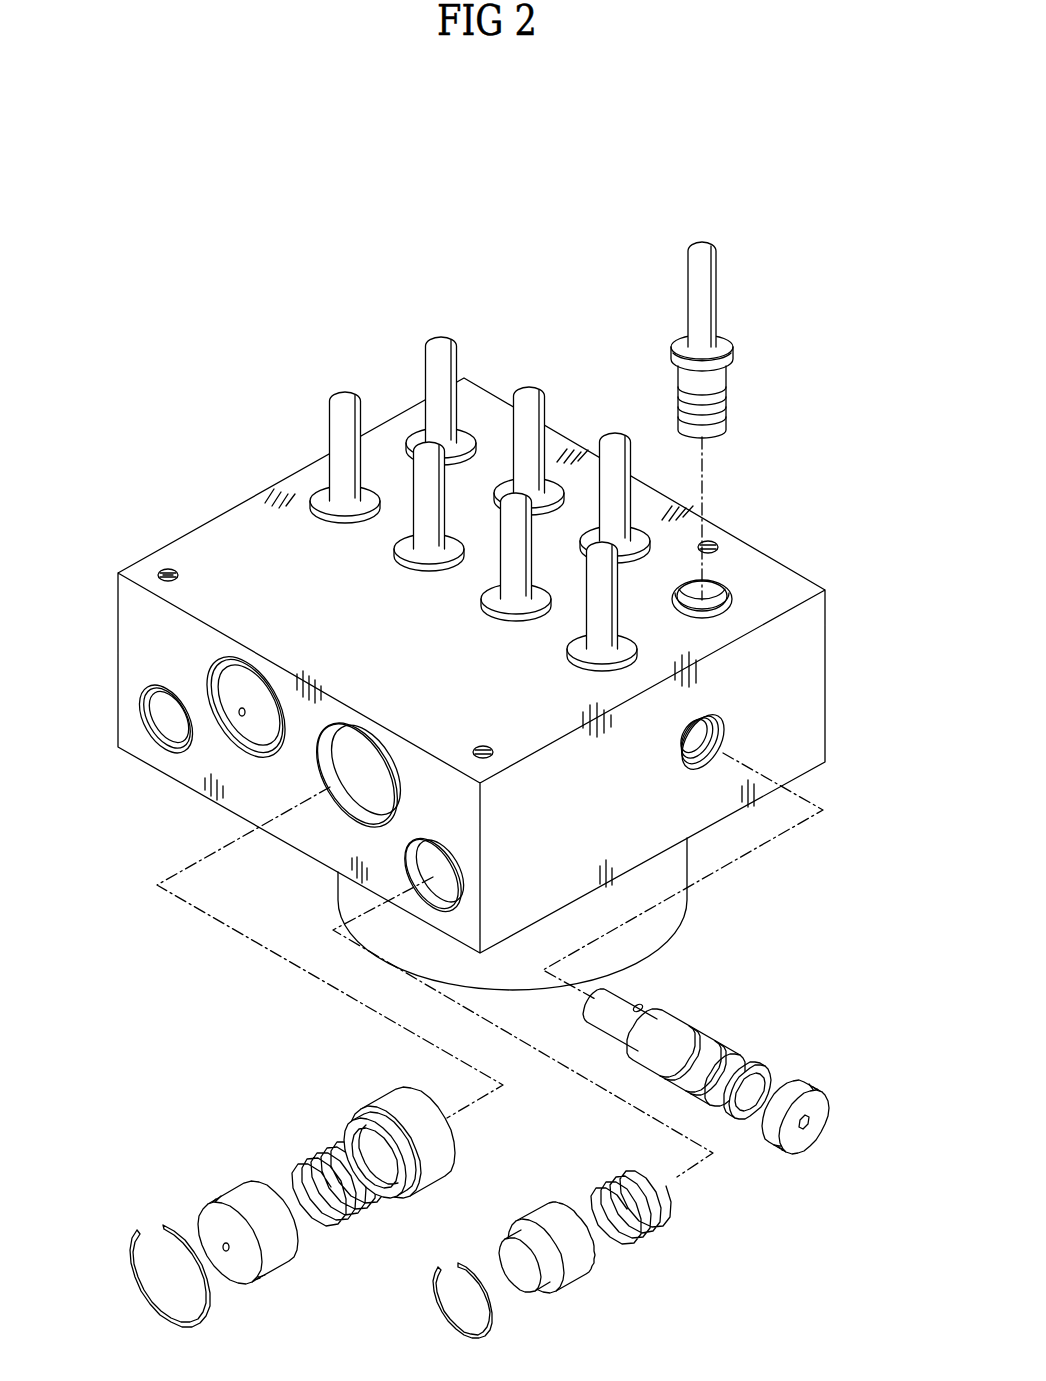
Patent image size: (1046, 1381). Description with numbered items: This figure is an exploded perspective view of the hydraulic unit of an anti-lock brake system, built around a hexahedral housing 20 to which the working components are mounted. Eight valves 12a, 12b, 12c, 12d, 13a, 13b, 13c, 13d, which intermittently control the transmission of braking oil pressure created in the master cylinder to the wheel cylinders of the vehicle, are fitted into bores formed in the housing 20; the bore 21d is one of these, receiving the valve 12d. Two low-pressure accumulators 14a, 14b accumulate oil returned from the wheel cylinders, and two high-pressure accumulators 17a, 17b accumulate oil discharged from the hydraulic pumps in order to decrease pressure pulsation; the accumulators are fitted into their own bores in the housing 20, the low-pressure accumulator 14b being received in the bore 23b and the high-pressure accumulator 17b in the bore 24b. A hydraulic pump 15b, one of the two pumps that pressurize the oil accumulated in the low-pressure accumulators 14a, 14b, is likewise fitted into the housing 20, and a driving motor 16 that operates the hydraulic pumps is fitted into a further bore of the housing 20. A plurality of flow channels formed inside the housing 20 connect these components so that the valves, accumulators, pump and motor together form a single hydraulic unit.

The valve 12a is at (433, 365).
The valve 12b is at (528, 393).
The valve 12c is at (612, 440).
The valve 12d is at (713, 282).
The valve 13a is at (335, 417).
The valve 13b is at (420, 513).
The valve 13c is at (505, 565).
The valve 13d is at (593, 613).
The housing 20 is at (225, 527).
The bore 21d is at (717, 603).
The low-pressure accumulator 14a is at (225, 683).
The low-pressure accumulator 14b is at (267, 1133).
The hydraulic pump 15b is at (737, 1005).
The driving motor 16 is at (650, 943).
The high-pressure accumulator 17a is at (153, 718).
The high-pressure accumulator 17b is at (635, 1278).
The bore 23b is at (363, 760).
The bore 24b is at (443, 865).